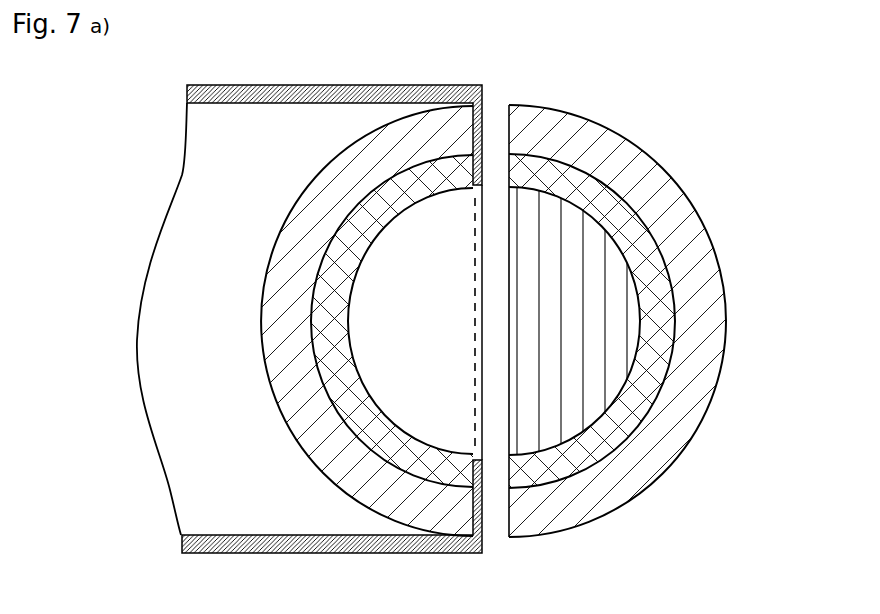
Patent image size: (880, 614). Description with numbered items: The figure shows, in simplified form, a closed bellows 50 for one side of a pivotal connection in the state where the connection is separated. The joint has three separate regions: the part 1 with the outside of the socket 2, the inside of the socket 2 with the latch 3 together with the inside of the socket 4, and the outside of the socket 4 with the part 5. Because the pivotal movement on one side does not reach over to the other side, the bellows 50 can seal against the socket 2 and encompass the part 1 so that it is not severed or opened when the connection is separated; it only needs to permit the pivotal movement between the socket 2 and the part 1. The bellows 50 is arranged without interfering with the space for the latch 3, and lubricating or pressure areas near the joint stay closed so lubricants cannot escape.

The bellows 50 is at (340, 95).
The part 1 is at (352, 170).
The socket 2 is at (405, 308).
The latch 3 is at (597, 248).
The socket 4 is at (665, 315).
The part 5 is at (630, 150).